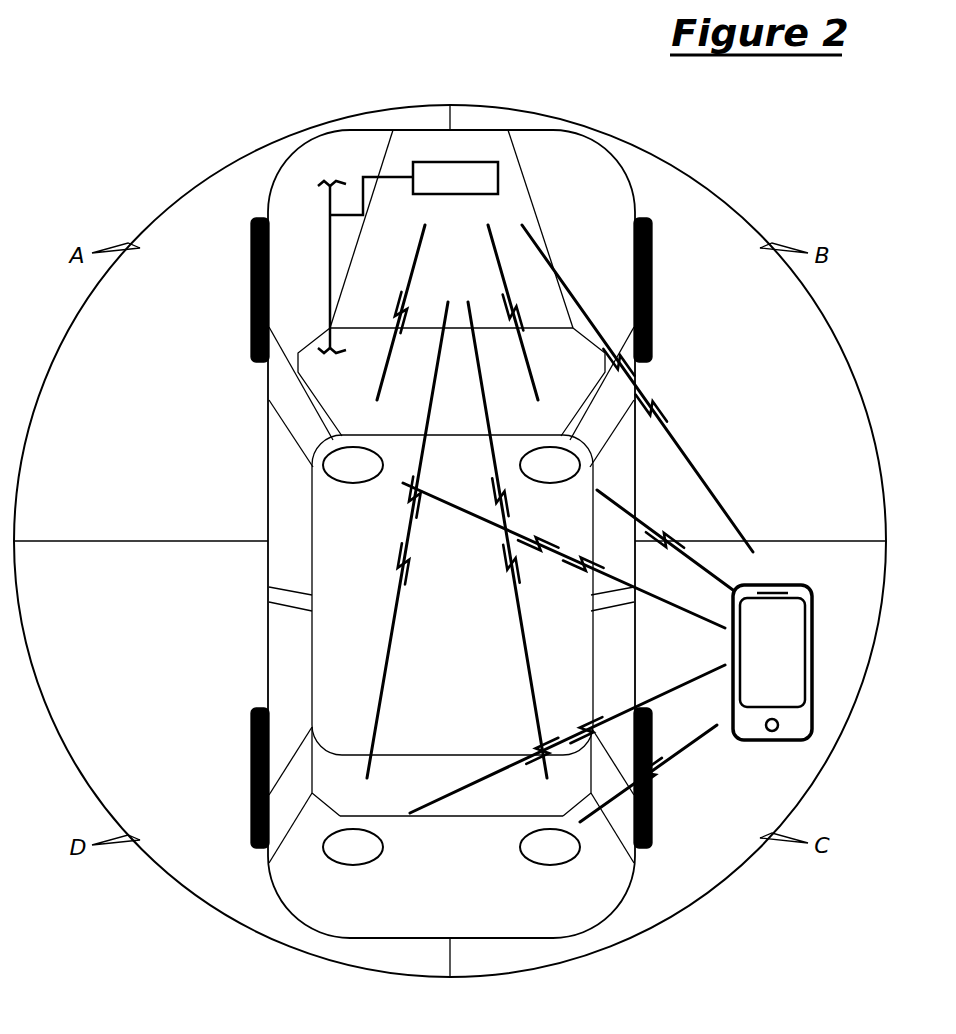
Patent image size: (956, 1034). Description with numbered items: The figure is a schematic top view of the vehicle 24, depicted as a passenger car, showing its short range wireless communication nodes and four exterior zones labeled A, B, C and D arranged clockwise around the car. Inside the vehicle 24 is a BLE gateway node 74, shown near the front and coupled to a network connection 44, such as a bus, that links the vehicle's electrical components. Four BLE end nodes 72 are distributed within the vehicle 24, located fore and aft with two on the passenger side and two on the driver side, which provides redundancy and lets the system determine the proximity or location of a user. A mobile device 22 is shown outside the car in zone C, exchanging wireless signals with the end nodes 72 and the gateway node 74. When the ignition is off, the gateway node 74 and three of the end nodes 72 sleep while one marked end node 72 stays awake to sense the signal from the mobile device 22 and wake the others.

The mobile device 22 is at (818, 602).
The vehicle 24 is at (612, 147).
The network connection 44 is at (327, 268).
The BLE end node 72 is at (338, 475).
The BLE gateway node 74 is at (443, 189).